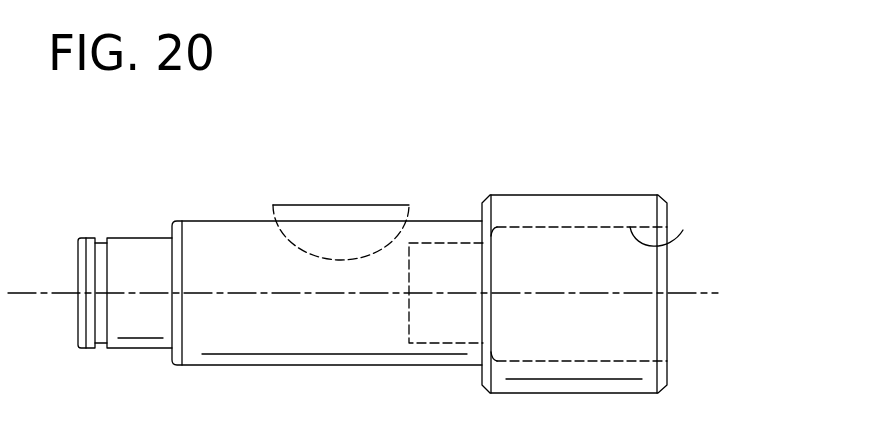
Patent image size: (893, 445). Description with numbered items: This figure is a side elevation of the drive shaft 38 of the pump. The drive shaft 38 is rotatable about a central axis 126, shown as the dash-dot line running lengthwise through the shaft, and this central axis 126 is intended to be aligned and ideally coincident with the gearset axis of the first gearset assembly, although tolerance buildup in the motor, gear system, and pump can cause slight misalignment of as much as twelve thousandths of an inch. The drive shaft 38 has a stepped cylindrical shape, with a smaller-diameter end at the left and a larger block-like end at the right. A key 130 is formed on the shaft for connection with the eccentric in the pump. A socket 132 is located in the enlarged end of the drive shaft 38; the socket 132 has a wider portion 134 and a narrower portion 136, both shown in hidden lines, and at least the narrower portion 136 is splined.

The drive shaft 38 is at (230, 221).
The central axis 126 is at (703, 293).
The key 130 is at (333, 205).
The socket 132 is at (683, 230).
The wider portion 134 is at (565, 227).
The narrower portion 136 is at (448, 243).